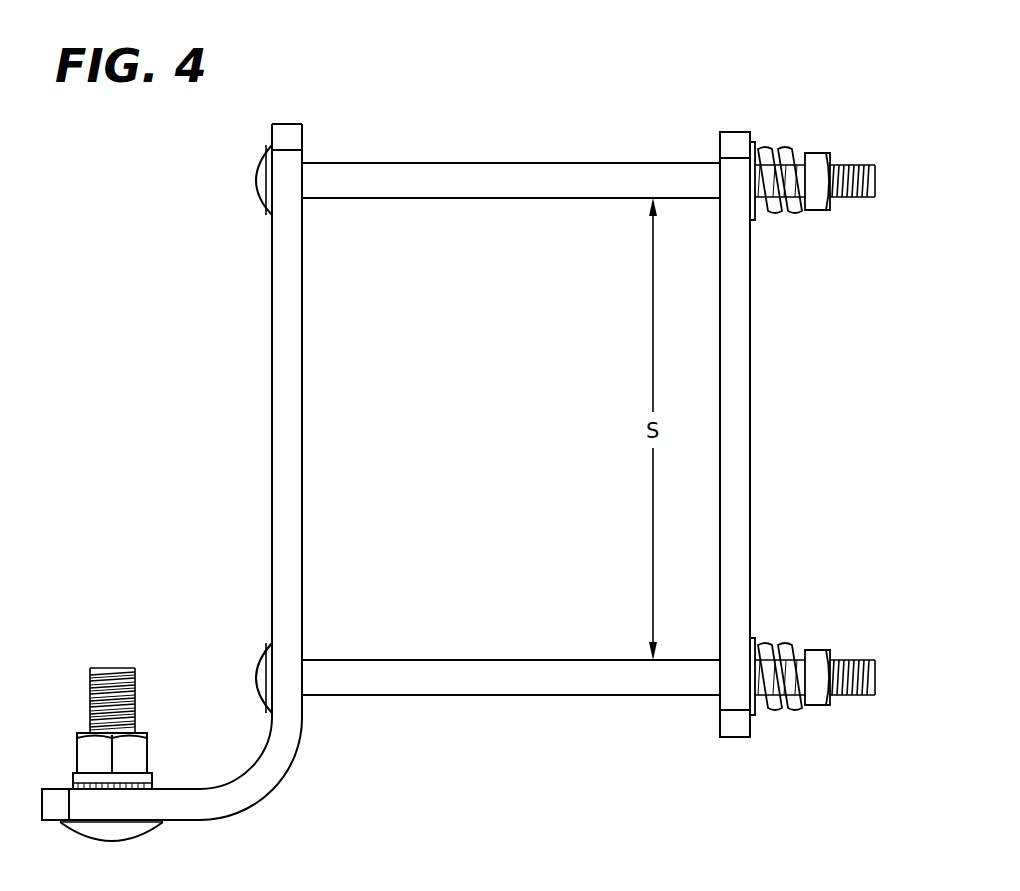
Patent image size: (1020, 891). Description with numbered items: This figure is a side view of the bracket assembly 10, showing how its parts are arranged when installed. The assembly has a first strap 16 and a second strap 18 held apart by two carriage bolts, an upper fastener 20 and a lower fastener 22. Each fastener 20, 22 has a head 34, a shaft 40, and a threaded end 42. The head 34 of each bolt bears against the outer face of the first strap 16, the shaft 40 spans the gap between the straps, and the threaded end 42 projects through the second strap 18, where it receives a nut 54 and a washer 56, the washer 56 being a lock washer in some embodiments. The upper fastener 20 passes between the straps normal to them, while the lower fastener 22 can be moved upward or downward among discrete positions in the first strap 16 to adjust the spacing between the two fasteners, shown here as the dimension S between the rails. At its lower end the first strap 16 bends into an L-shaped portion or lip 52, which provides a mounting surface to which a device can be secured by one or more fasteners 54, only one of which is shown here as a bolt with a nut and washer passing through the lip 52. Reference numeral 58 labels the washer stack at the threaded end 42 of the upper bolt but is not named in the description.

The bracket assembly 10 is at (388, 72).
The first strap 16 is at (276, 399).
The second strap 18 is at (738, 410).
The upper fastener 20 is at (403, 188).
The lower fastener 22 is at (403, 685).
The head 34 is at (256, 181).
The shaft 40 is at (524, 162).
The threaded end 42 is at (852, 195).
The L-shaped portion or lip 52 is at (200, 805).
The fastener 54 is at (132, 753).
The washer 56 is at (815, 152).
The spring washer 58 is at (786, 147).